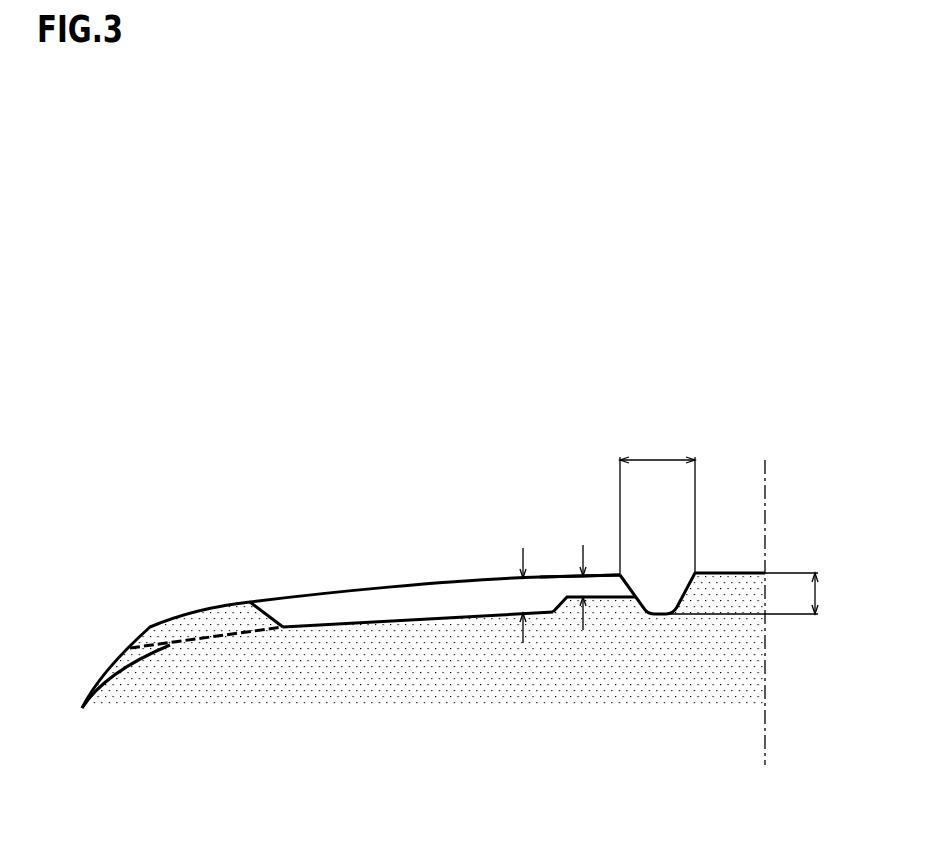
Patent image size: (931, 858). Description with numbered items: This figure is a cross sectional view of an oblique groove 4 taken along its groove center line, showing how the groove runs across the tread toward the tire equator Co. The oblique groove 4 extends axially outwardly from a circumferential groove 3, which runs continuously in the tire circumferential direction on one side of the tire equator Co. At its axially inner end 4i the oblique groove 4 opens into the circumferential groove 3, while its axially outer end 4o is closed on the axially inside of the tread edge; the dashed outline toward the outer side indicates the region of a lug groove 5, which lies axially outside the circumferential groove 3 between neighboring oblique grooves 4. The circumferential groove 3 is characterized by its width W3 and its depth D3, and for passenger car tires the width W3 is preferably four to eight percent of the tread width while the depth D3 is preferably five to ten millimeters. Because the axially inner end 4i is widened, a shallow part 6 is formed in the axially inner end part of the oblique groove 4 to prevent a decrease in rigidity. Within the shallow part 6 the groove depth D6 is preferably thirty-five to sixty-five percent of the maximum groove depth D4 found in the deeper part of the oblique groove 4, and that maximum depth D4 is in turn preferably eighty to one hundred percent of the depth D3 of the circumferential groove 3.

The circumferential groove 3 is at (657, 593).
The oblique groove 4 is at (433, 617).
The axially outer end 4o is at (282, 596).
The axially inner end 4i is at (599, 566).
The lug groove 5 is at (210, 638).
The shallow part 6 is at (573, 597).
The groove width W3 is at (655, 460).
The tire equator Co is at (762, 599).
The groove depth D3 is at (817, 593).
The maximum groove depth D4 is at (523, 600).
The groove depth in shallow part D6 is at (587, 593).